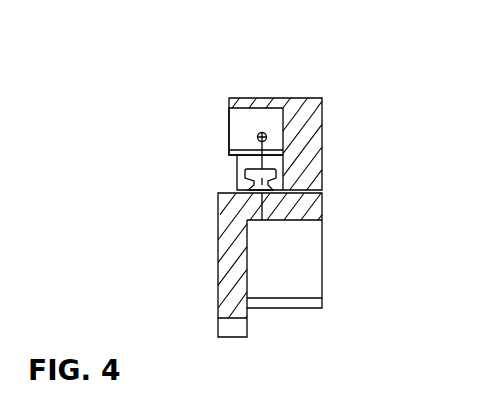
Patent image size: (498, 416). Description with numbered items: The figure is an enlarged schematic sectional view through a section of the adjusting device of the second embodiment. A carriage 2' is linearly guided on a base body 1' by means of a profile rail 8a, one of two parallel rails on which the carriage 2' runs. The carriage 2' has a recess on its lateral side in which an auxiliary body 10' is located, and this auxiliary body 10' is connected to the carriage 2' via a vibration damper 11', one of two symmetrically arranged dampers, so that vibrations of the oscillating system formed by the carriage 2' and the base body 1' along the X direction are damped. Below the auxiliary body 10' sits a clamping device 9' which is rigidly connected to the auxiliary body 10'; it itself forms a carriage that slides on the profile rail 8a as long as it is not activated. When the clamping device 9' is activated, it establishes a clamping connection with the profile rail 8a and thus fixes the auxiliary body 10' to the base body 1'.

The base body 1' is at (212, 265).
The carriage 2' is at (324, 132).
The profile rail 8a is at (272, 180).
The clamping device 9' is at (195, 179).
The auxiliary body 10' is at (193, 106).
The vibration damper 11' is at (185, 135).